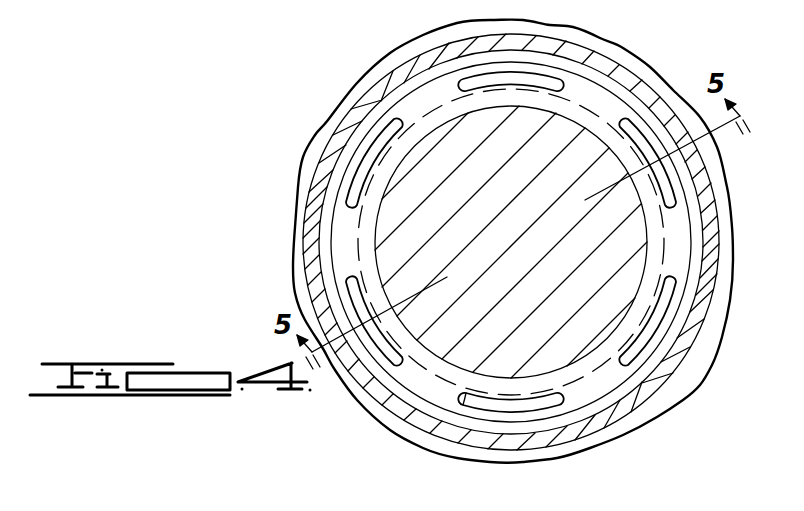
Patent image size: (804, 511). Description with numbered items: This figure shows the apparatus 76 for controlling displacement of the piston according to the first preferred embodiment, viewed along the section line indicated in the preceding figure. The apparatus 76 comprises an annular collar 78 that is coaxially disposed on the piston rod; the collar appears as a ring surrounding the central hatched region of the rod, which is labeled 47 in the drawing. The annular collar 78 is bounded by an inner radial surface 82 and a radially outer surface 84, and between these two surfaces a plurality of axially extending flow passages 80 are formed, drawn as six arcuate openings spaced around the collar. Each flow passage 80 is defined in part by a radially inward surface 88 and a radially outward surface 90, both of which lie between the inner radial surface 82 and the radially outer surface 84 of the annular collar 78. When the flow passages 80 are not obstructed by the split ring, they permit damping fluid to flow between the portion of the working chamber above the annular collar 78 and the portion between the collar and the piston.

The apparatus for controlling displacement of the piston 76 is at (330, 93).
The annular collar 78 is at (400, 378).
The radially outer surface of the annular collar 84 is at (325, 259).
The flow passages 80 is at (352, 297).
The inner radial surface of the annular collar 82 is at (380, 229).
The central plate 47 is at (507, 273).
The radially inward surface of the flow passages 88 is at (535, 409).
The radially outward surface of the flow passages 90 is at (472, 409).